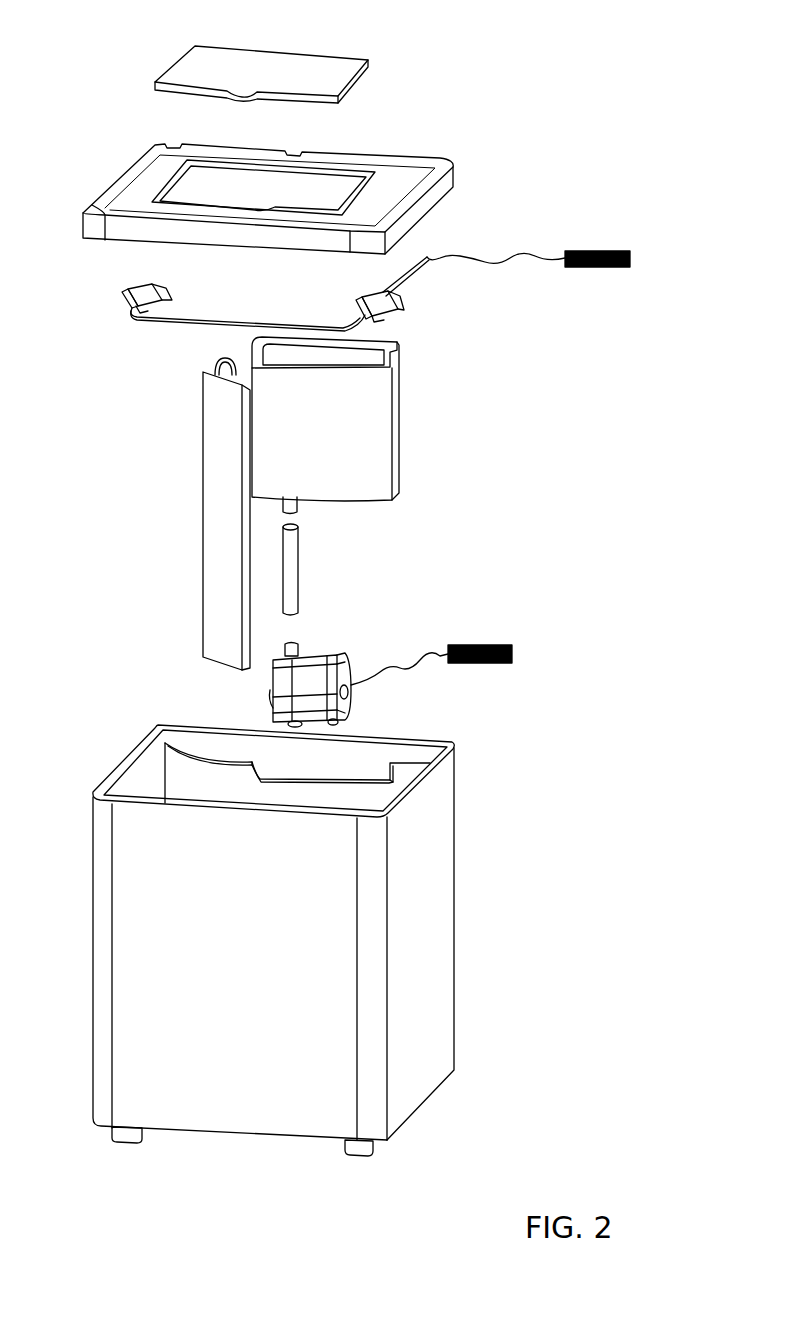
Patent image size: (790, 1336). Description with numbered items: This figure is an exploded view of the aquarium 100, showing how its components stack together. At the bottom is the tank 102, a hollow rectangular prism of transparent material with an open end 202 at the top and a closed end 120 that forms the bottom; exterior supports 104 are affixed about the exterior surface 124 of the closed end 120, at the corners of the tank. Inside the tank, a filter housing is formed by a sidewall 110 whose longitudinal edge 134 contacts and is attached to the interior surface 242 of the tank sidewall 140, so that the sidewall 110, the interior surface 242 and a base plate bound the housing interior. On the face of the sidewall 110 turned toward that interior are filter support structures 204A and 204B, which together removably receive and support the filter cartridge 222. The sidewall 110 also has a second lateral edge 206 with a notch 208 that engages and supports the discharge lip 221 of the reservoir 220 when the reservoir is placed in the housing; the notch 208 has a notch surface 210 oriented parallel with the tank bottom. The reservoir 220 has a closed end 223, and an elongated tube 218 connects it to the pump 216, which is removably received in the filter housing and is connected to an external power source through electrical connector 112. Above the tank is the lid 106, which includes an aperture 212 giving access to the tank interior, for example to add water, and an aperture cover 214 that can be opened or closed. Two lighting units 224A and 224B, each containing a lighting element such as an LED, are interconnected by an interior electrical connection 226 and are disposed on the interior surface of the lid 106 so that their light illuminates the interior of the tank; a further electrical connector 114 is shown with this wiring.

The aquarium 100 is at (556, 104).
The tank 102 is at (307, 973).
The exterior supports 104 is at (120, 1145).
The lid 106 is at (292, 178).
The sidewall 110 is at (218, 795).
The electrical connector 112 is at (470, 640).
The electrical connector 114 is at (603, 248).
The closed end 120 is at (221, 1147).
The exterior surface 124 is at (273, 1140).
The longitudinal edge 134 is at (162, 781).
The sidewall 140 is at (448, 736).
The open end 202 is at (143, 721).
The filter support structure 204A is at (205, 745).
The filter support structure 204B is at (258, 765).
The second lateral edge 206 is at (182, 747).
The notch 208 is at (298, 771).
The notch surface 210 is at (348, 778).
The aperture 212 is at (345, 189).
The aperture cover 214 is at (345, 66).
The pump 216 is at (322, 656).
The tube 218 is at (300, 574).
The reservoir 220 is at (397, 438).
The discharge lip 221 is at (363, 370).
The filter cartridge 222 is at (213, 548).
The closed end 223 is at (381, 505).
The lighting unit 224A is at (165, 296).
The lighting unit 224B is at (405, 312).
The interior electrical connection 226 is at (256, 326).
The interior surface 242 is at (392, 750).